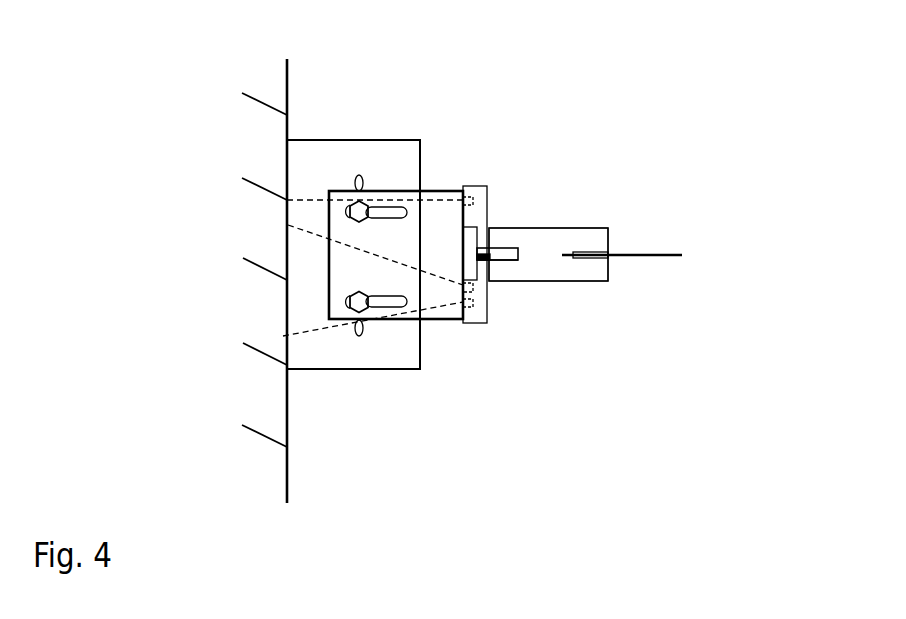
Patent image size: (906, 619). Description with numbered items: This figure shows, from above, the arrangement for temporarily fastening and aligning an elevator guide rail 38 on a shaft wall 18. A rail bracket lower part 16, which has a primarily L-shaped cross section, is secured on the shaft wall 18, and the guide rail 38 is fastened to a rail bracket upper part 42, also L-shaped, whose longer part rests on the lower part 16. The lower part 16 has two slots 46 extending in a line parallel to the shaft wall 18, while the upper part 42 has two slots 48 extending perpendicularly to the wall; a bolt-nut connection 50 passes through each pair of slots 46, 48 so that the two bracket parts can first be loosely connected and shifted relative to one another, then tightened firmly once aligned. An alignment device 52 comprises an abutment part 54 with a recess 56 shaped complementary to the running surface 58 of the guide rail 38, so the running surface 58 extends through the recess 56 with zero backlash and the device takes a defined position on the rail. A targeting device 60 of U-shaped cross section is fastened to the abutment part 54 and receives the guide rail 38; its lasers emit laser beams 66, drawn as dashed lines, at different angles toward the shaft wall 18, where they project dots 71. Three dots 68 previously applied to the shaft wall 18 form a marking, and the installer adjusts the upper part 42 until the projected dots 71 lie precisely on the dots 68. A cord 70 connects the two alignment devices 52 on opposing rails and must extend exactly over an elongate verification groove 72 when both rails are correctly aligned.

The shaft wall 18 is at (270, 77).
The rail bracket lower part 16 is at (297, 142).
The rail bracket upper part 42 is at (438, 188).
The slots 46 is at (358, 176).
The slots 48 is at (377, 203).
The bolt-nut connection 50 is at (345, 208).
The targeting device 60 is at (494, 167).
The guide rail 38 is at (478, 250).
The abutment part 54 is at (583, 235).
The alignment device 52 is at (604, 303).
The recess 56 is at (508, 255).
The running surface 58 is at (497, 260).
The cord 70 is at (655, 253).
The groove 72 is at (603, 257).
The laser beam 66 is at (318, 328).
The dots 68 is at (290, 286).
The dots 71 is at (292, 336).